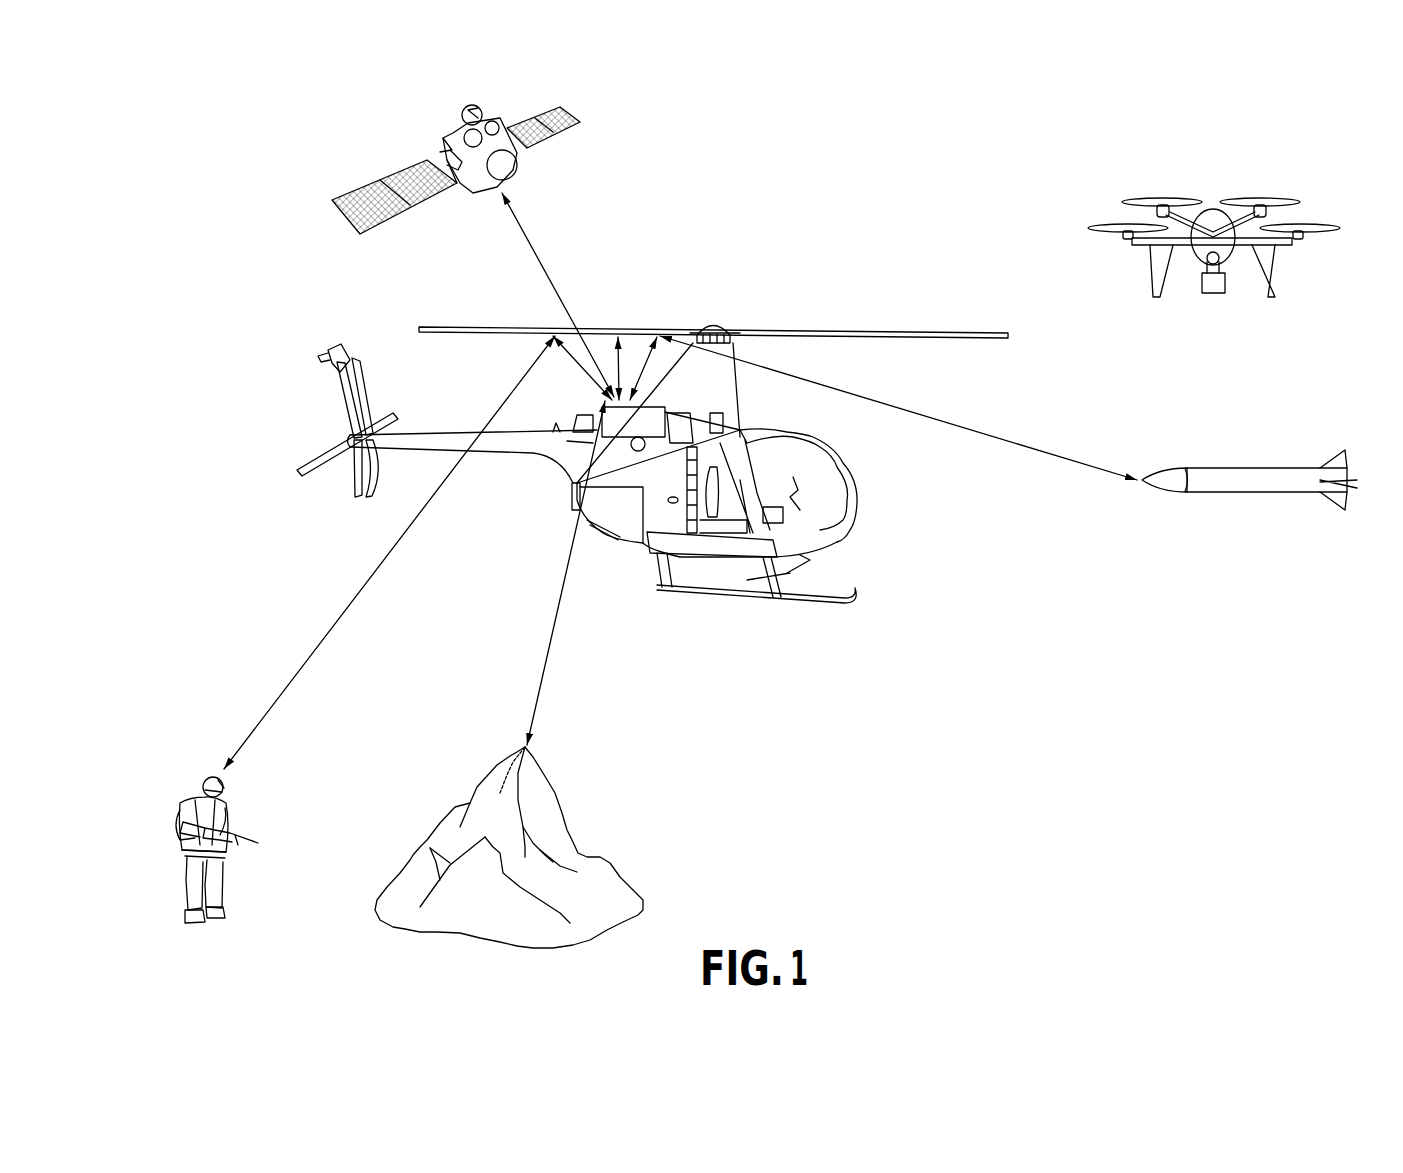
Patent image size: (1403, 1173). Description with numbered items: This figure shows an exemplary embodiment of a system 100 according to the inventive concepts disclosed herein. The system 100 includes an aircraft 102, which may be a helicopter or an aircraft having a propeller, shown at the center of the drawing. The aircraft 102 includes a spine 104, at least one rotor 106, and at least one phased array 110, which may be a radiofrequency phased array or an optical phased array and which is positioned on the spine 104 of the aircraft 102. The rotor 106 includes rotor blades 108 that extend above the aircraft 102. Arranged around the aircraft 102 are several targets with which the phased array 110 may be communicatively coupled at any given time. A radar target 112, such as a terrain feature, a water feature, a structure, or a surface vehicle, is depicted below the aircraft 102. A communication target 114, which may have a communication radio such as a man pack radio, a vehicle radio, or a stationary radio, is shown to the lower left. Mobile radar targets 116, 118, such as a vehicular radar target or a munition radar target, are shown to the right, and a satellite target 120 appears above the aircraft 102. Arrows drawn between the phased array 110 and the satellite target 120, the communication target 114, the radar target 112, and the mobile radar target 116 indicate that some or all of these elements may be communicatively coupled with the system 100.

The system 100 is at (350, 103).
The aircraft 102 is at (866, 498).
The spine 104 is at (462, 432).
The rotor 106 is at (836, 338).
The rotor blades 108 is at (482, 327).
The phased array 110 is at (665, 411).
The radar target 112 is at (570, 828).
The communication target 114 is at (210, 770).
The mobile radar target 116 is at (1245, 468).
The mobile radar target 118 is at (1215, 295).
The satellite target 120 is at (505, 178).